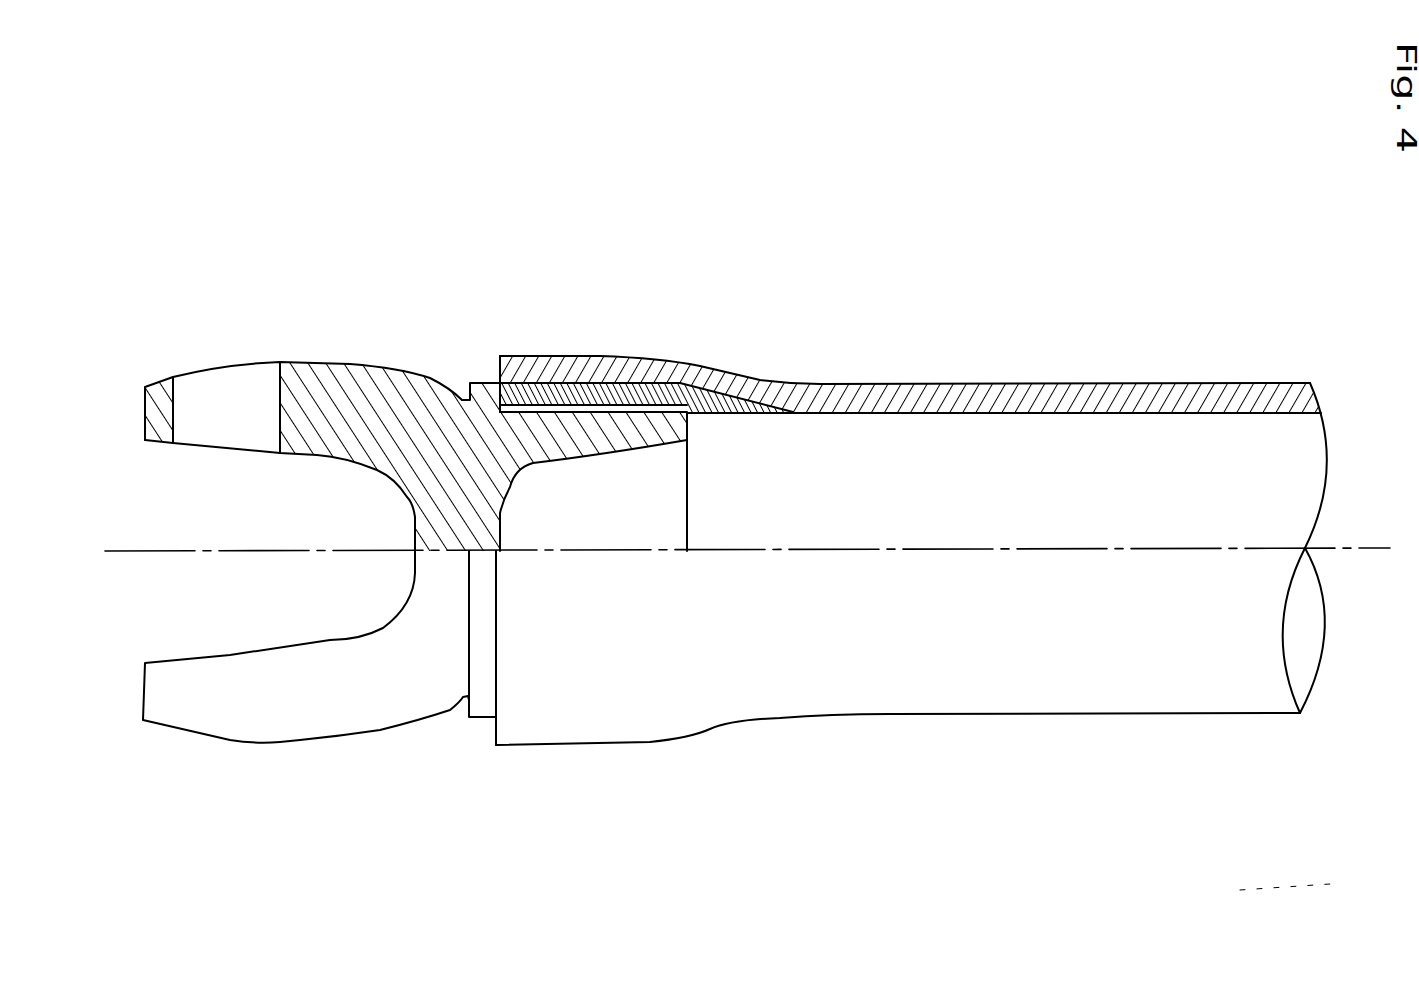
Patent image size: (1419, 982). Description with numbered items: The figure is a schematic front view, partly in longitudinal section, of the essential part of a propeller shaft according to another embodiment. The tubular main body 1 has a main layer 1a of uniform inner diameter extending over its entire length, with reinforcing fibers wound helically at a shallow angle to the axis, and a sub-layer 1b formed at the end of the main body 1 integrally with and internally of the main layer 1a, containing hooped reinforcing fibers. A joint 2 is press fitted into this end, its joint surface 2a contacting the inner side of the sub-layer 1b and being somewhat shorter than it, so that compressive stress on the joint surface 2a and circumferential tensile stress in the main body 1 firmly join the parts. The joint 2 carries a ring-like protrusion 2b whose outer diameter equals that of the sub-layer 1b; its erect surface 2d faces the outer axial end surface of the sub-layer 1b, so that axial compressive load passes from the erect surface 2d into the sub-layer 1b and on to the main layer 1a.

The main body 1 is at (911, 554).
The main layer 1a is at (1040, 383).
The sub-layer 1b is at (605, 383).
The joint 2 is at (252, 758).
The joint surface 2a is at (670, 385).
The ring-like protrusion 2b is at (483, 382).
The erect surface 2d is at (540, 382).